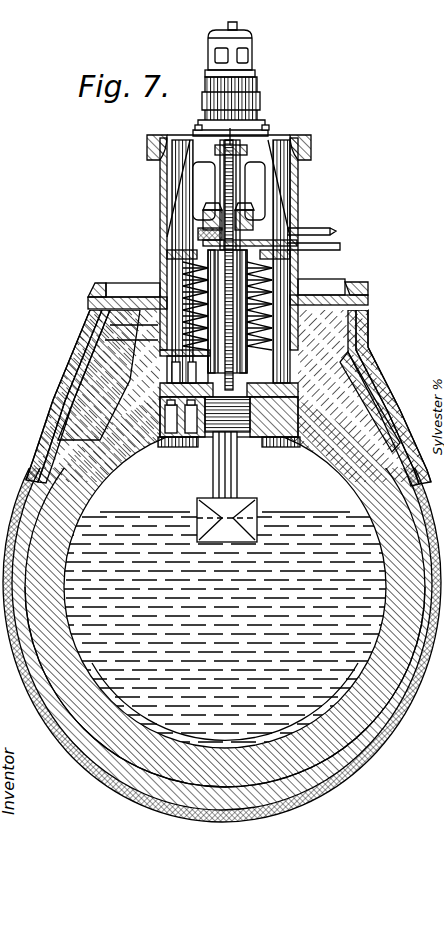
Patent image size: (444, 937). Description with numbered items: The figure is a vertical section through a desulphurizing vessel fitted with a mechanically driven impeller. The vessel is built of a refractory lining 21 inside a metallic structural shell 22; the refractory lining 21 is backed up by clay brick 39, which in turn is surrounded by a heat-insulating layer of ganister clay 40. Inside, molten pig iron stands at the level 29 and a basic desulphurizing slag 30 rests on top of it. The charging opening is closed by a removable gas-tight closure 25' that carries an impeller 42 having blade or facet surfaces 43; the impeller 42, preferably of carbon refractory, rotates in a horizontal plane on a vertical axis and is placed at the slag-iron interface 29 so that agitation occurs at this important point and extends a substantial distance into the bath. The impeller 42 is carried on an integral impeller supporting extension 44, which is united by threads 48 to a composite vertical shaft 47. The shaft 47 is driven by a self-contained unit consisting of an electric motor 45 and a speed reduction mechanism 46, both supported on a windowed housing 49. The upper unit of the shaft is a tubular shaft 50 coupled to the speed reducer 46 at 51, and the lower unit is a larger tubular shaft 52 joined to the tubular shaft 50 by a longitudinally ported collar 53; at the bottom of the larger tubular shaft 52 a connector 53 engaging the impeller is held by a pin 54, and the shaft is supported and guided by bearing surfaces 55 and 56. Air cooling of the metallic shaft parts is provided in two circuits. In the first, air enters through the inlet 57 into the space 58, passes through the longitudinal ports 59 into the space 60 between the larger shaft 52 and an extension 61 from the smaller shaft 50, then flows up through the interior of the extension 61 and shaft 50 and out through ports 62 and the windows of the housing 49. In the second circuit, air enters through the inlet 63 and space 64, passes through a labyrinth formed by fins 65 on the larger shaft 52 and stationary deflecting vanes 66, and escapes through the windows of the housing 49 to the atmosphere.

The refractory lining 21 is at (102, 773).
The metallic structural shell 22 is at (363, 778).
The removable gas-tight closure 25' is at (89, 277).
The level of molten pig iron 29 is at (135, 517).
The basic desulphurizing slag 30 is at (168, 512).
The clay brick 39 is at (390, 727).
The heat-insulating layer of ganister clay 40 is at (75, 410).
The impeller 42 is at (236, 508).
The blade or facet surfaces 43 is at (262, 506).
The impeller supporting extension 44 is at (213, 461).
The electric motor 45 is at (247, 52).
The speed reduction mechanism 46 is at (259, 98).
The composite vertical shaft 47 is at (203, 248).
The threads 48 is at (250, 437).
The windowed housing 49 is at (170, 140).
The tubular shaft 50 is at (205, 232).
The coupling 51 is at (262, 142).
The larger tubular shaft 52 is at (112, 326).
The longitudinally ported collar 53 is at (195, 283).
The pin 54 is at (175, 378).
The bearing surface 55 is at (250, 214).
The bearing surface 56 is at (300, 279).
The inlet 57 is at (340, 250).
The space 58 is at (257, 236).
The longitudinal ports 59 is at (298, 322).
The space 60 is at (138, 364).
The extension 61 is at (118, 344).
The ports 62 is at (222, 200).
The inlet 63 is at (332, 231).
The space 64 is at (284, 291).
The fins 65 is at (345, 372).
The stationary deflecting vanes 66 is at (368, 350).